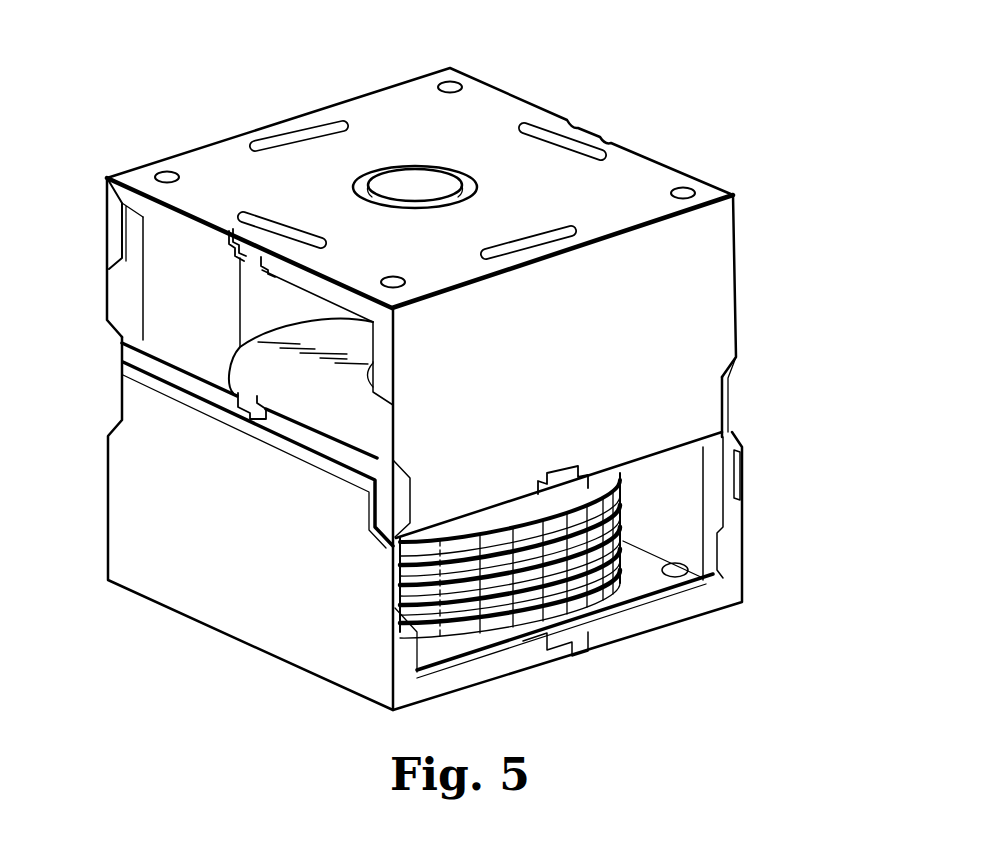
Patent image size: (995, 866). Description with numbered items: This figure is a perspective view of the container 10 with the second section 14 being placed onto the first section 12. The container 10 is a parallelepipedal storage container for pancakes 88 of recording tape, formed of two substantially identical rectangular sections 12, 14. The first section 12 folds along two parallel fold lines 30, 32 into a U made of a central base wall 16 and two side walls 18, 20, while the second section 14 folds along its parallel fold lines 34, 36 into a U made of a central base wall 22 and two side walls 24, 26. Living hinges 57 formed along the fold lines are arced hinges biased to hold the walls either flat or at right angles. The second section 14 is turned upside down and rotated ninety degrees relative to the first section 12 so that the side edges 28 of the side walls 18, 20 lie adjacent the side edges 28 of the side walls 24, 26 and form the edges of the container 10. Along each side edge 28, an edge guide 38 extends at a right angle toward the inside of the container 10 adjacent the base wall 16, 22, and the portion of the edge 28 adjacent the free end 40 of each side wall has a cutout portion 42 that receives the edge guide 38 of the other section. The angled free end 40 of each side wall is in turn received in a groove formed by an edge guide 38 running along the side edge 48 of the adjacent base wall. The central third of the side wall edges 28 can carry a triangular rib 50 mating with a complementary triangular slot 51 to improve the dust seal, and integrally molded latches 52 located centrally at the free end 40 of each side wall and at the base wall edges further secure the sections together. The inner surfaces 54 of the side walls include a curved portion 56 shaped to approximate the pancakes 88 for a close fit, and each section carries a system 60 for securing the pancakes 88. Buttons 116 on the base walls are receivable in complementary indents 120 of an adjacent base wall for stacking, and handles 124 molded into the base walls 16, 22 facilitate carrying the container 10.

The container 10 is at (249, 88).
The first section 12 is at (722, 622).
The second section 14 is at (752, 222).
The central base wall 16 is at (475, 643).
The side wall 18 is at (300, 648).
The side wall 20 is at (703, 545).
The central base wall 22 is at (366, 105).
The side wall 24 is at (160, 272).
The side wall 26 is at (697, 293).
The side edge 28 is at (728, 452).
The fold line 30 is at (243, 642).
The fold line 32 is at (742, 603).
The fold line 34 is at (718, 190).
The fold line 36 is at (106, 177).
The edge guide 38 is at (624, 630).
The free end 40 is at (188, 384).
The cutout portion 42 is at (727, 399).
The side edge 48 is at (128, 238).
The triangular rib 50 is at (153, 305).
The triangular slot 51 is at (734, 467).
The latch 52 is at (250, 411).
The inner surface 54 is at (197, 260).
The curved portion 56 is at (283, 300).
The living hinge 57 is at (162, 604).
The system for securing a plurality of disk-shaped articles 60 is at (158, 330).
The pancake 88 is at (620, 582).
The button 116 is at (677, 578).
The indent 120 is at (670, 188).
The handle 124 is at (542, 233).